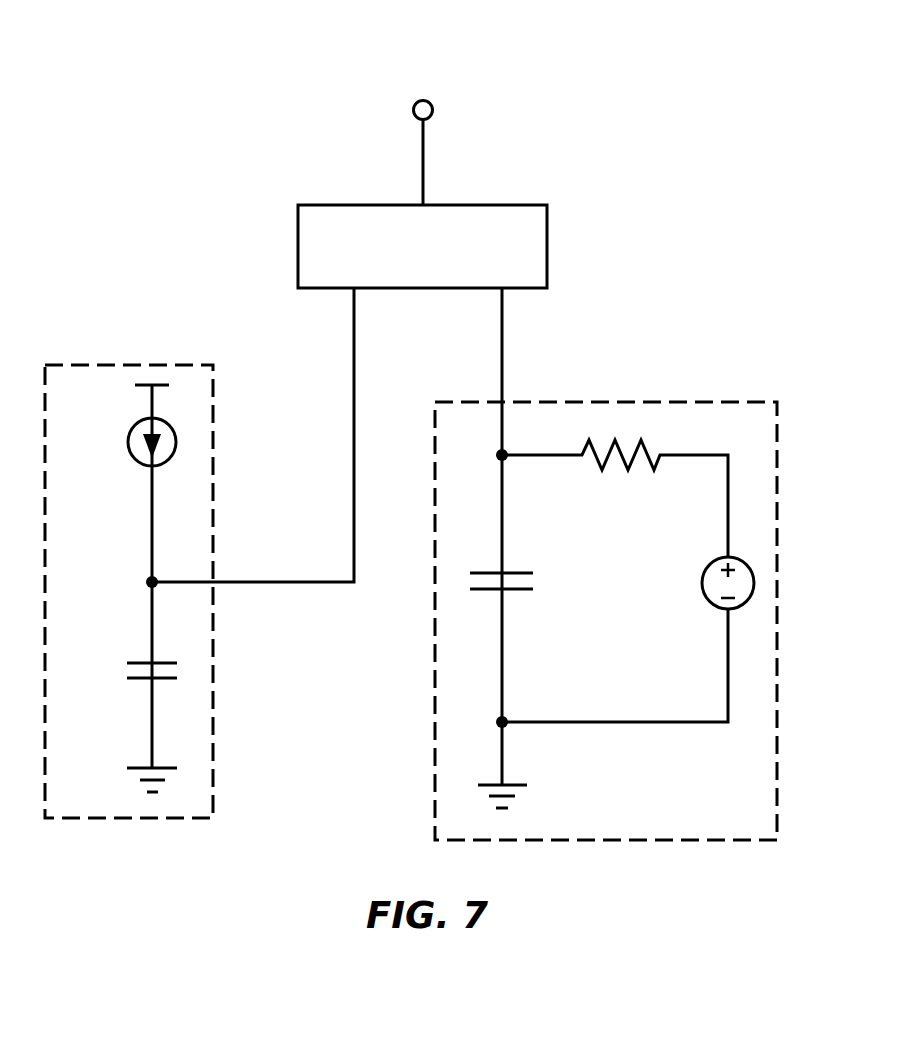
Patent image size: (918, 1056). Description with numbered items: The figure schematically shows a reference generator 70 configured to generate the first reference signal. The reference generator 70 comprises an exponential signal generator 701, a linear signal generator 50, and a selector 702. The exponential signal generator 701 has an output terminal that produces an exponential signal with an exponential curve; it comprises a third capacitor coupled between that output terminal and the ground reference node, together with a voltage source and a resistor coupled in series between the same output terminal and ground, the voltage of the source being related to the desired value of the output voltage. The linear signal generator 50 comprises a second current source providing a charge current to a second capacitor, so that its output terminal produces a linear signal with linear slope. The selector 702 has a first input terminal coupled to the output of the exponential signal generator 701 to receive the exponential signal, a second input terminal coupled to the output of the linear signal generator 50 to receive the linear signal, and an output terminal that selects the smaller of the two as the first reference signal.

The reference generator 70 is at (693, 83).
The selector 702 is at (548, 247).
The exponential signal generator 701 is at (717, 400).
The linear signal generator 50 is at (107, 353).